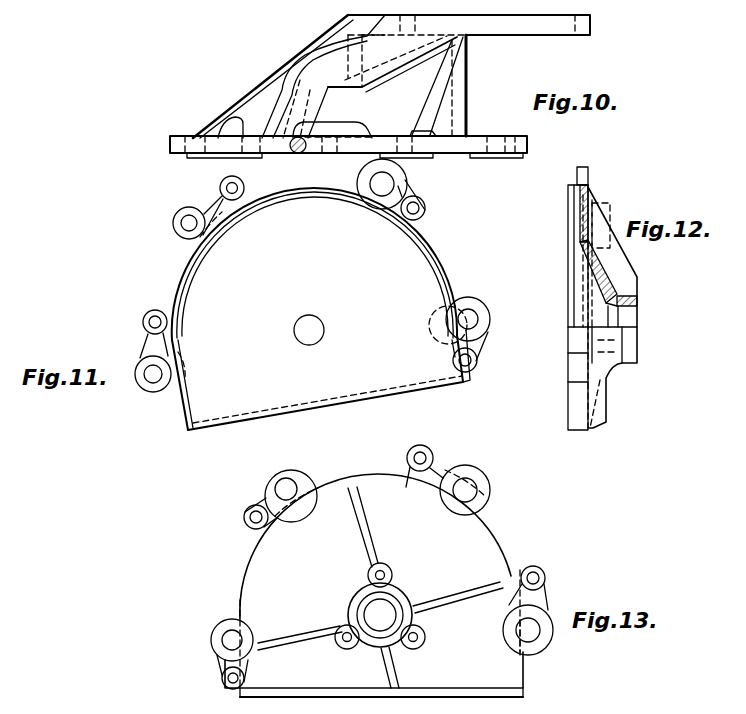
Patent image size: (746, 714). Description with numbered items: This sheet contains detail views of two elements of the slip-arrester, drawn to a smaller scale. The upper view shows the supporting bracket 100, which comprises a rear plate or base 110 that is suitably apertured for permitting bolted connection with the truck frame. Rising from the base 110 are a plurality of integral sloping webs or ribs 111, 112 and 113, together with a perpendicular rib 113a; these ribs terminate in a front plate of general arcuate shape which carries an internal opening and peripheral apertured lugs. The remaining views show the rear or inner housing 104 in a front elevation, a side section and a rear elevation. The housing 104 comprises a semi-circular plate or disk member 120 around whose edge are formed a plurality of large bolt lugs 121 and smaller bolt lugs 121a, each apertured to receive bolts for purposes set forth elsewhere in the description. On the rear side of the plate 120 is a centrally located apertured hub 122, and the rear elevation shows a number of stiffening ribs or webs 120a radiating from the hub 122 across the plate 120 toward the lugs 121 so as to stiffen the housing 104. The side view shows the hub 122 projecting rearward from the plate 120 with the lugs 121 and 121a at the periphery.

In FIG. 10, the supporting bracket 100 is at (546, 12).
In FIG. 10, the rear plate or base 110 is at (539, 35).
In FIG. 10, the sloping web or rib 111 is at (250, 92).
In FIG. 10, the sloping web or rib 112 is at (276, 103).
In FIG. 10, the sloping web or rib 113 is at (418, 110).
In FIG. 10, the perpendicular rib 113a is at (468, 102).
In FIG. 11, the rear or inner housing 104 is at (292, 294).
In FIG. 11, the semi-circular plate or disk member 120 is at (321, 309).
In FIG. 13, the stiffening ribs or webs 120a is at (467, 597).
In FIG. 11, the large bolt lugs 121 is at (140, 403).
In FIG. 13, the large bolt lugs 121 is at (486, 496).
In FIG. 11, the smaller bolt lugs 121a is at (240, 183).
In FIG. 13, the smaller bolt lugs 121a is at (430, 456).
In FIG. 12, the apertured hub 122 is at (638, 300).
In FIG. 13, the apertured hub 122 is at (400, 604).